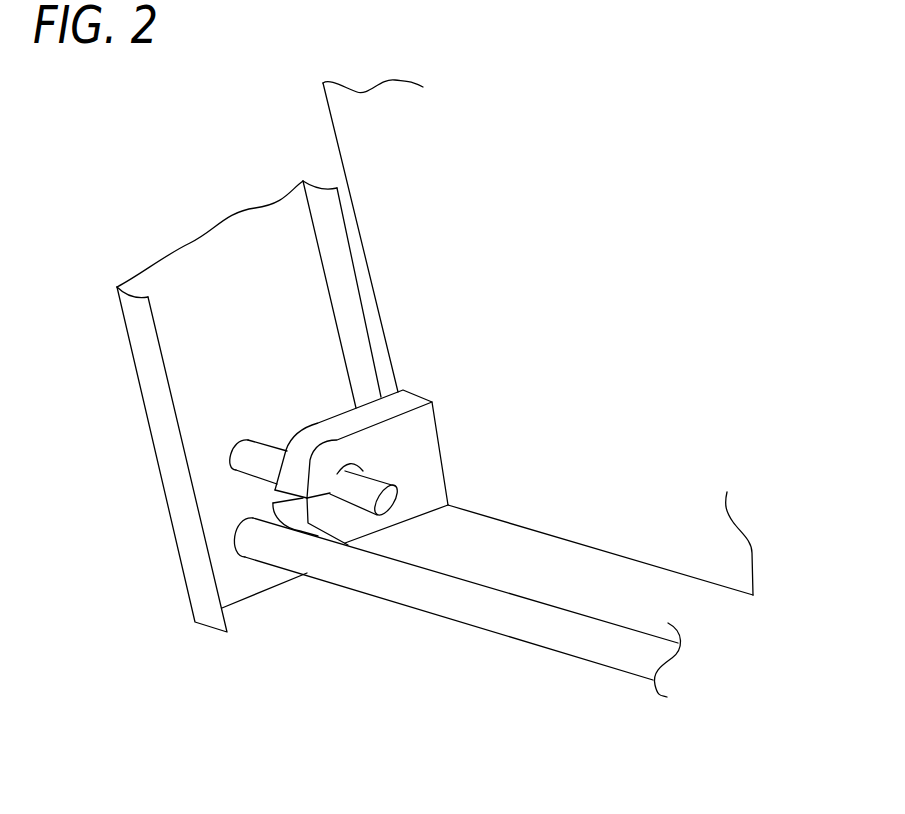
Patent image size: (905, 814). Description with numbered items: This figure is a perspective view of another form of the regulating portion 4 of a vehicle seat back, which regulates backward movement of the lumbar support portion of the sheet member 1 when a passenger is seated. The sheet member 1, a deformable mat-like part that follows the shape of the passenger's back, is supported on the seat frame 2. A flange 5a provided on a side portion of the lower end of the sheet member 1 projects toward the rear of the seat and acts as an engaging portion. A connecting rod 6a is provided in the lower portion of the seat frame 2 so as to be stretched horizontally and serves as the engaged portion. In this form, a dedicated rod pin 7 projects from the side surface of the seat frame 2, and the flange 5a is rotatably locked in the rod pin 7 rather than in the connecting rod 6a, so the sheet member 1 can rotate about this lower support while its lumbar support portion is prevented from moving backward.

The sheet member 1 is at (331, 120).
The seat frame 2 is at (134, 367).
The regulating portion 4 is at (417, 353).
The rod pin 7 is at (381, 477).
The flange 5a is at (415, 523).
The connecting rod 6a is at (572, 655).